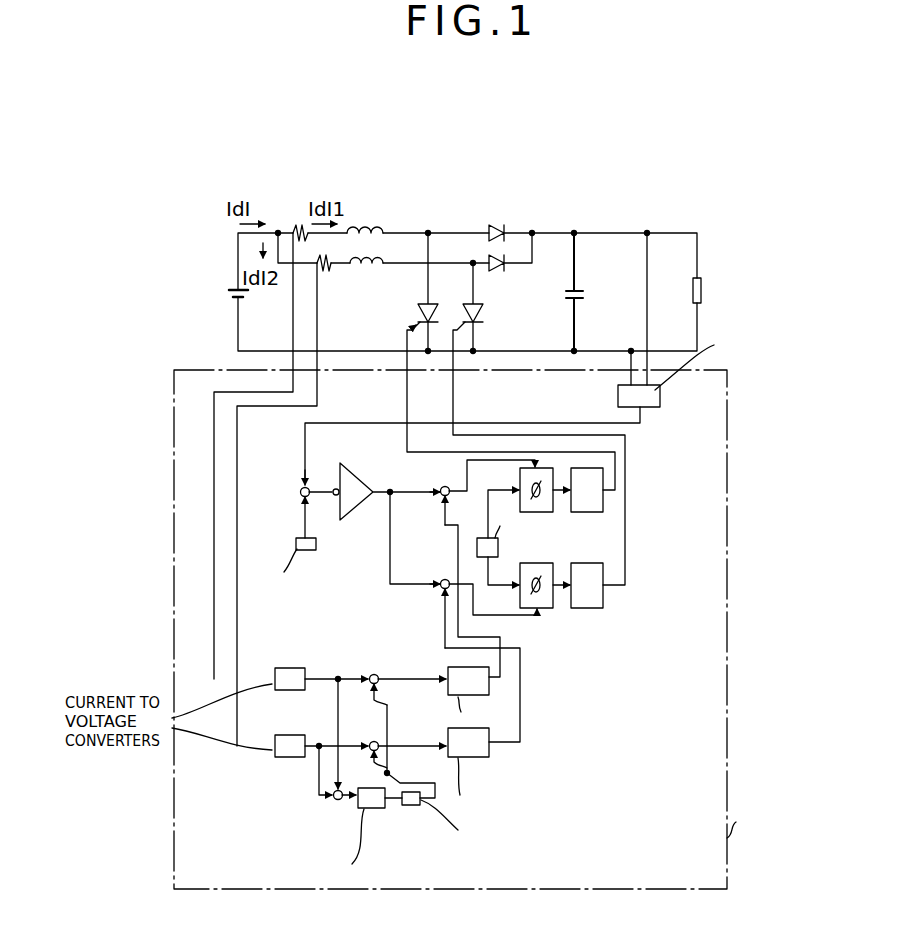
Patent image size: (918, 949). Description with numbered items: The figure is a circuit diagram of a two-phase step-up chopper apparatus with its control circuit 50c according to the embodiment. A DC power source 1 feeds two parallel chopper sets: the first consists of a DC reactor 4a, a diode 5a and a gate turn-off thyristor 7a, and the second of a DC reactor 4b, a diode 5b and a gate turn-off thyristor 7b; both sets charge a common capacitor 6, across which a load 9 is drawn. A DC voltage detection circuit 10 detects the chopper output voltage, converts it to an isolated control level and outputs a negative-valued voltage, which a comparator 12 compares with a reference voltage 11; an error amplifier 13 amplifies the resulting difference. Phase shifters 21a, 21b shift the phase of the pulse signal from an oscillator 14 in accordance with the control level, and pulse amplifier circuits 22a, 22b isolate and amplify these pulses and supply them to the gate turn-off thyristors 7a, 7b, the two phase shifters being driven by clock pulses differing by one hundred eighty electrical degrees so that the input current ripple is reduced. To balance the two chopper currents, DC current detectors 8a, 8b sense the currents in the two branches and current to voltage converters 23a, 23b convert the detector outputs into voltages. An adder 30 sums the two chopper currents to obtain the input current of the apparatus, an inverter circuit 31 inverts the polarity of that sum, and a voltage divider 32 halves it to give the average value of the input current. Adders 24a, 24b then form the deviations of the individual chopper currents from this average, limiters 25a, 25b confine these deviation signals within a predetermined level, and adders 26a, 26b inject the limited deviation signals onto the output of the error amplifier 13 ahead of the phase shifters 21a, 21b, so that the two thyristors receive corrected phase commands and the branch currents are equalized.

The DC power source 1 is at (226, 292).
The DC reactor 4a is at (362, 232).
The DC reactor 4b is at (373, 265).
The diode 5a is at (497, 226).
The diode 5b is at (495, 271).
The capacitor 6 is at (585, 294).
The gate turn-off thyristor 7a is at (418, 313).
The gate turn-off thyristor 7b is at (483, 316).
The DC current detector 8a is at (296, 229).
The DC current detector 8b is at (320, 266).
The load resistor 9 is at (702, 294).
The DC voltage detection circuit 10 is at (661, 397).
The reference voltage 11 is at (318, 544).
The comparator 12 is at (300, 490).
The error amplifier 13 is at (343, 472).
The oscillator 14 is at (479, 538).
The phase shifter 21a is at (532, 513).
The phase shifter 21b is at (547, 609).
The pulse amplifier circuit 22a is at (586, 513).
The pulse amplifier circuit 22b is at (600, 609).
The current to voltage converter 23a is at (291, 668).
The current to voltage converter 23b is at (291, 735).
The adder 24a is at (375, 673).
The adder 24b is at (380, 740).
The limiter 25a is at (488, 696).
The limiter 25b is at (486, 758).
The adder 26a is at (442, 487).
The adder 26b is at (441, 578).
The adder 30 is at (336, 800).
The inverter circuit 31 is at (376, 809).
The voltage divider 32 is at (415, 806).
The control circuit 50c is at (728, 876).